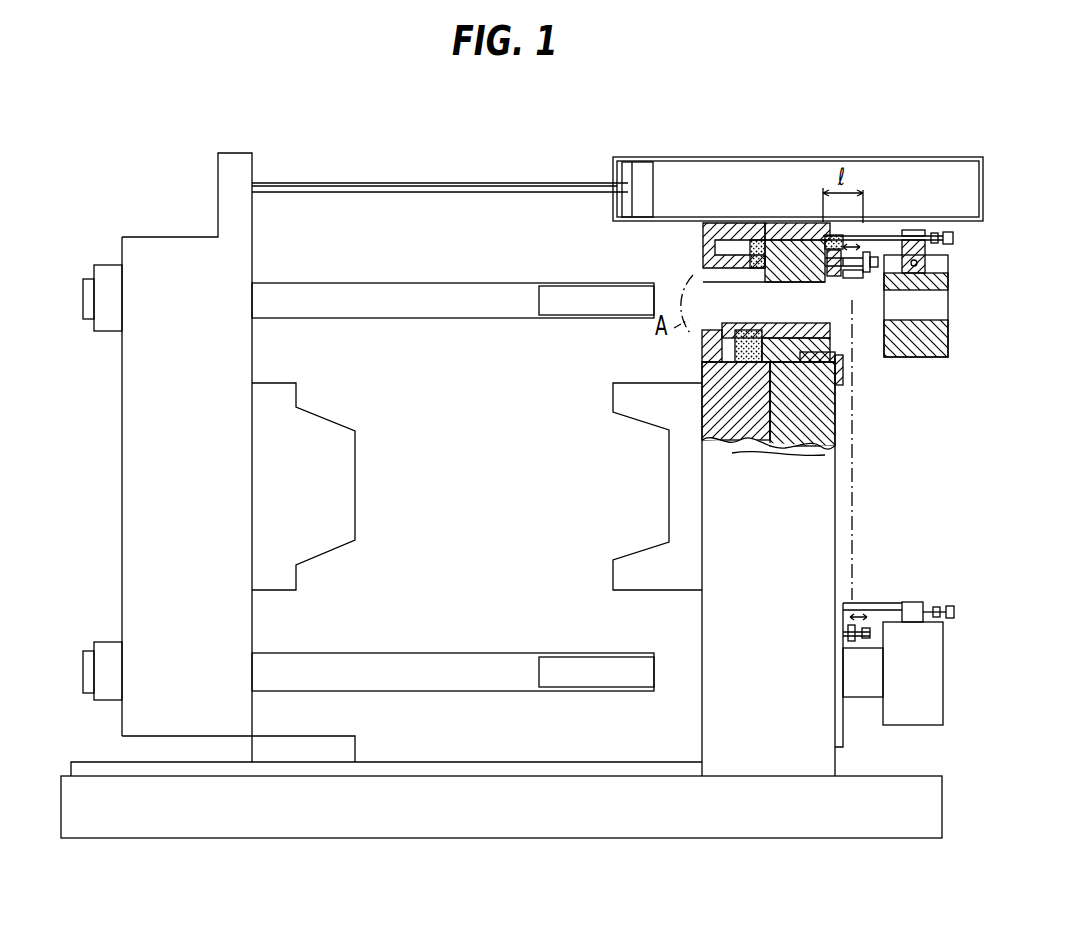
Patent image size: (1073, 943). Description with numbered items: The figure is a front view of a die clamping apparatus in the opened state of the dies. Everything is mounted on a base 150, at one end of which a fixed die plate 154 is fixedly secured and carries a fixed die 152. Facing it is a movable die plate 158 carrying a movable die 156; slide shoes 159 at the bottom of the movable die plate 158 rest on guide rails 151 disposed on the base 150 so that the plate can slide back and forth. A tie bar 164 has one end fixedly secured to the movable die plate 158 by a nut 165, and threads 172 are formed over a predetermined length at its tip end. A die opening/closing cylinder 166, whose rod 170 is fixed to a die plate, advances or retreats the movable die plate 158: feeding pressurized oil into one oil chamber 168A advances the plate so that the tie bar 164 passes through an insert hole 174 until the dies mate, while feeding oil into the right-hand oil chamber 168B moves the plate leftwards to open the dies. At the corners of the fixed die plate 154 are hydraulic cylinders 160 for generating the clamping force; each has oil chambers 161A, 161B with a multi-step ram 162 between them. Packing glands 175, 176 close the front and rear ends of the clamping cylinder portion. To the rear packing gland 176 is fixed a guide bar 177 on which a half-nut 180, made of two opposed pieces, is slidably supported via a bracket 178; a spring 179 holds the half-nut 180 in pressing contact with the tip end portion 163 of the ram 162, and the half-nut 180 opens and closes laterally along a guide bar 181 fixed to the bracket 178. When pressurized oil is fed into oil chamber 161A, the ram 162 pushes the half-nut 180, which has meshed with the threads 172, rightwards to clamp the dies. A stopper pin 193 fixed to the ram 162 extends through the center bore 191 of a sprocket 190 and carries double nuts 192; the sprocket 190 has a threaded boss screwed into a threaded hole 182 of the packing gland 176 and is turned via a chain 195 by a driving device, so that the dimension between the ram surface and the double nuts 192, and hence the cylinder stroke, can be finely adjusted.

The base 150 is at (940, 776).
The guide rails 151 is at (592, 762).
The fixed die 152 is at (669, 446).
The fixed die plate 154 is at (702, 618).
The movable die 156 is at (338, 477).
The movable die plate 158 is at (165, 250).
The slide shoes 159 is at (356, 750).
The hydraulic cylinder 160 is at (770, 455).
The oil chamber 161A is at (745, 362).
The oil chamber 161B is at (800, 362).
The ram 162 is at (845, 345).
The tip end portion 163 is at (843, 240).
The tie bar 164 is at (370, 283).
The nut 165 is at (100, 265).
The die opening/closing cylinder 166 is at (962, 157).
The oil chamber 168A is at (625, 165).
The oil chamber 168B is at (712, 180).
The rod 170 is at (373, 183).
The threads 172 is at (562, 286).
The insert hole 174 is at (745, 282).
The packing gland 175 is at (703, 346).
The packing gland 176 is at (845, 368).
The guide bar 177 is at (953, 238).
The bracket 178 is at (925, 232).
The spring 179 is at (942, 242).
The half-nut 180 is at (935, 345).
The guide bar 181 is at (918, 266).
The threaded hole 182 is at (822, 282).
The sprocket 190 is at (855, 275).
The center bore 191 is at (850, 258).
The double nuts 192 is at (874, 262).
The stopper pin 193 is at (860, 290).
The chain 195 is at (856, 516).